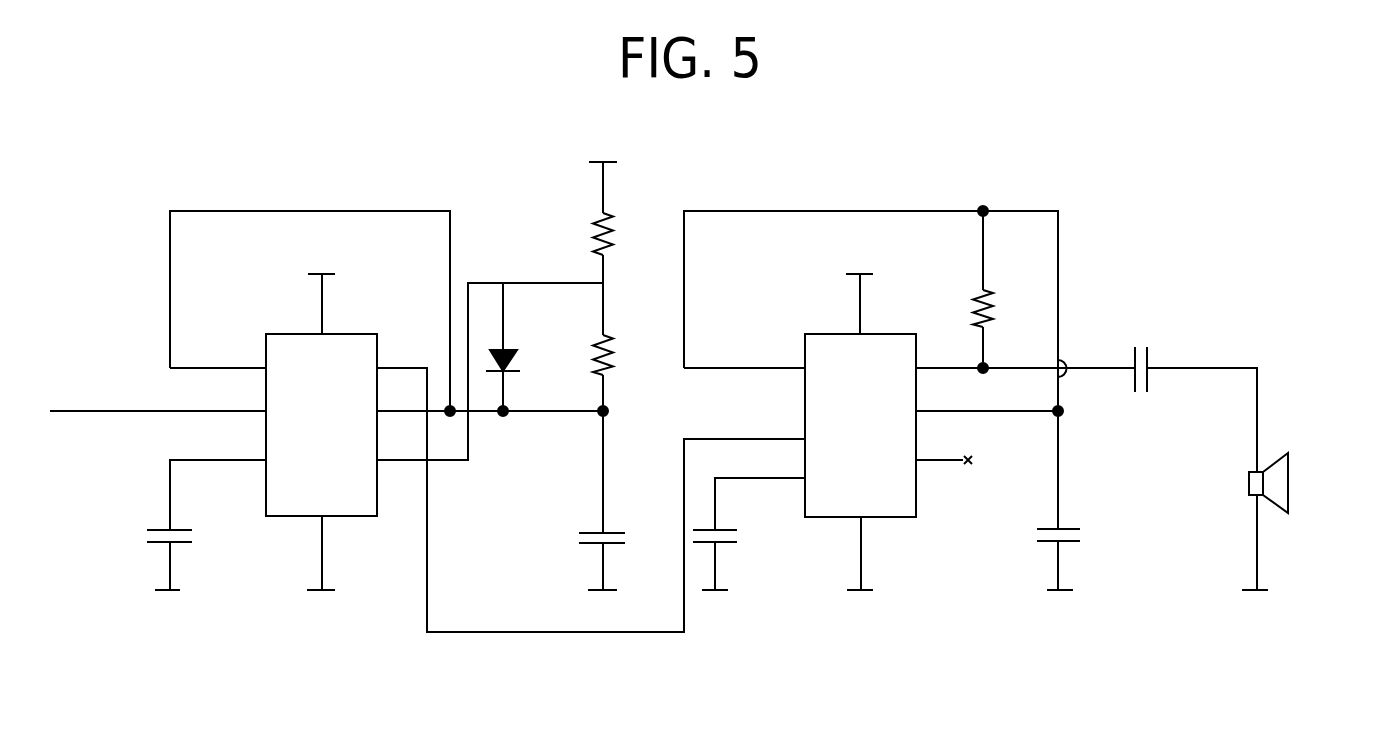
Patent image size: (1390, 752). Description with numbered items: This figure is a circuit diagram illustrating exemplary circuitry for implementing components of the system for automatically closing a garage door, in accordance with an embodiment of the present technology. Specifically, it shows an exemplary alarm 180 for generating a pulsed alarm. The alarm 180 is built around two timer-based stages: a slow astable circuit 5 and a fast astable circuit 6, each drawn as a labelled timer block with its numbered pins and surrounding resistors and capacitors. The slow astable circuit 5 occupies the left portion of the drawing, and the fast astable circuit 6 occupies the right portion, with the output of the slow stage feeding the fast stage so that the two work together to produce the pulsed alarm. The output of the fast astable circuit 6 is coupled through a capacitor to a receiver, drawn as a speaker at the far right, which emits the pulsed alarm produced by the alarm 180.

The alarm 180 is at (370, 662).
The slow astable circuit 5 is at (321, 425).
The fast astable circuit 6 is at (860, 425).